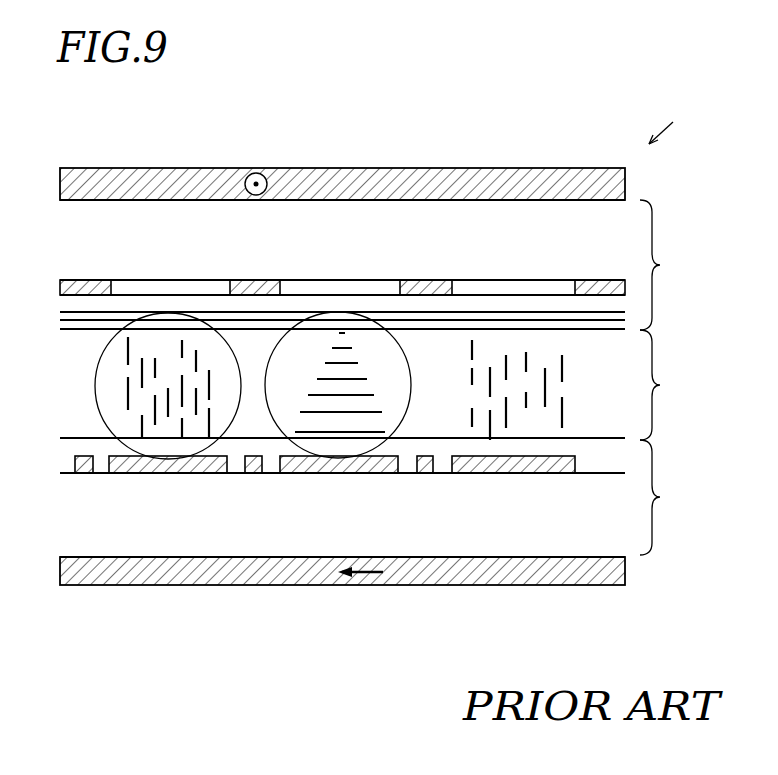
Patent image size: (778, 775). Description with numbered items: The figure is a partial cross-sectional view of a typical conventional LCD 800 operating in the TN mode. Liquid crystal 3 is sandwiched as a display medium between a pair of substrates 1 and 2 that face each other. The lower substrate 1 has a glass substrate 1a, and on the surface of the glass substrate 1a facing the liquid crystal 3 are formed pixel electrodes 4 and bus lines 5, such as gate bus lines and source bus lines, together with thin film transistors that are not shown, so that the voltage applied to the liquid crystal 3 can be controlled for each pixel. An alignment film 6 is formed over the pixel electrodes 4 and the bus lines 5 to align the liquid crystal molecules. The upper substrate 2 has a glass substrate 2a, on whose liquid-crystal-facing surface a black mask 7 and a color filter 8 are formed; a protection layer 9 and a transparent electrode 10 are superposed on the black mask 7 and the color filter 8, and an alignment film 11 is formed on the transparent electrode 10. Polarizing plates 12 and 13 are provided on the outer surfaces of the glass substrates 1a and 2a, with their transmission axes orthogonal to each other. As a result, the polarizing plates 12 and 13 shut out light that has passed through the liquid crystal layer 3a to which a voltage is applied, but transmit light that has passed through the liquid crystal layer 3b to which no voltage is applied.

The conventional LCD 800 is at (687, 117).
The substrate 1 is at (659, 497).
The glass substrate 1a is at (485, 537).
The substrate 2 is at (659, 265).
The glass substrate 2a is at (493, 220).
The liquid crystal 3 is at (659, 385).
The liquid crystal layer to which a voltage is applied 3a is at (95, 397).
The liquid crystal layer to which no voltage is applied 3b is at (275, 443).
The pixel electrode 4 is at (288, 462).
The bus line 5 is at (423, 472).
The alignment film 6 is at (233, 466).
The black mask 7 is at (427, 280).
The color filter 8 is at (345, 288).
The protection layer 9 is at (288, 300).
The transparent electrode 10 is at (118, 318).
The alignment film 11 is at (88, 325).
The polarizing plate 12 is at (568, 573).
The polarizing plate 13 is at (579, 185).